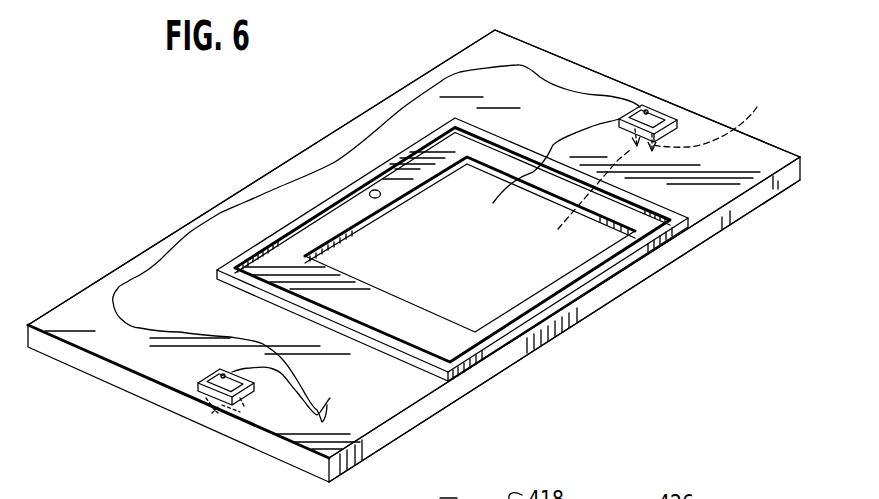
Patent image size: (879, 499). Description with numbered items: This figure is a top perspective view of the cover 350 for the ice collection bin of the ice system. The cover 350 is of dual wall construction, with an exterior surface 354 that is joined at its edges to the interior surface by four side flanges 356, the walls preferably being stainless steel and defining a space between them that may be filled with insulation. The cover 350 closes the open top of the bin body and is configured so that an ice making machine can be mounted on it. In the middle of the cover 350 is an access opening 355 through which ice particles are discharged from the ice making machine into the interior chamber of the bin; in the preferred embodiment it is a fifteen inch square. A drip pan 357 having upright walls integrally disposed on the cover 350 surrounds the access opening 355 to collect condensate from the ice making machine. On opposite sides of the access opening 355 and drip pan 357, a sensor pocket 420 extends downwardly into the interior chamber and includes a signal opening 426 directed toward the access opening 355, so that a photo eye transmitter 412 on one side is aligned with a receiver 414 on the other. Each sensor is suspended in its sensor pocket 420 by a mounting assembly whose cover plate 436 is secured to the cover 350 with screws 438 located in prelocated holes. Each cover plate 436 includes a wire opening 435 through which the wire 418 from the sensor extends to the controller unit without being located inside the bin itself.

The cover 350 is at (565, 43).
The exterior surface 354 is at (769, 154).
The side flanges 356 is at (748, 204).
The drip pan 357 is at (393, 153).
The access opening 355 is at (519, 279).
The cover plate 436 is at (495, 172).
The wire 418 is at (245, 203).
The wire opening 435 is at (677, 110).
The transmitter 412 is at (682, 107).
The sensor pocket 420 is at (725, 113).
The signal opening 426 is at (570, 199).
The screws 438 is at (200, 368).
The receiver 414 is at (214, 412).